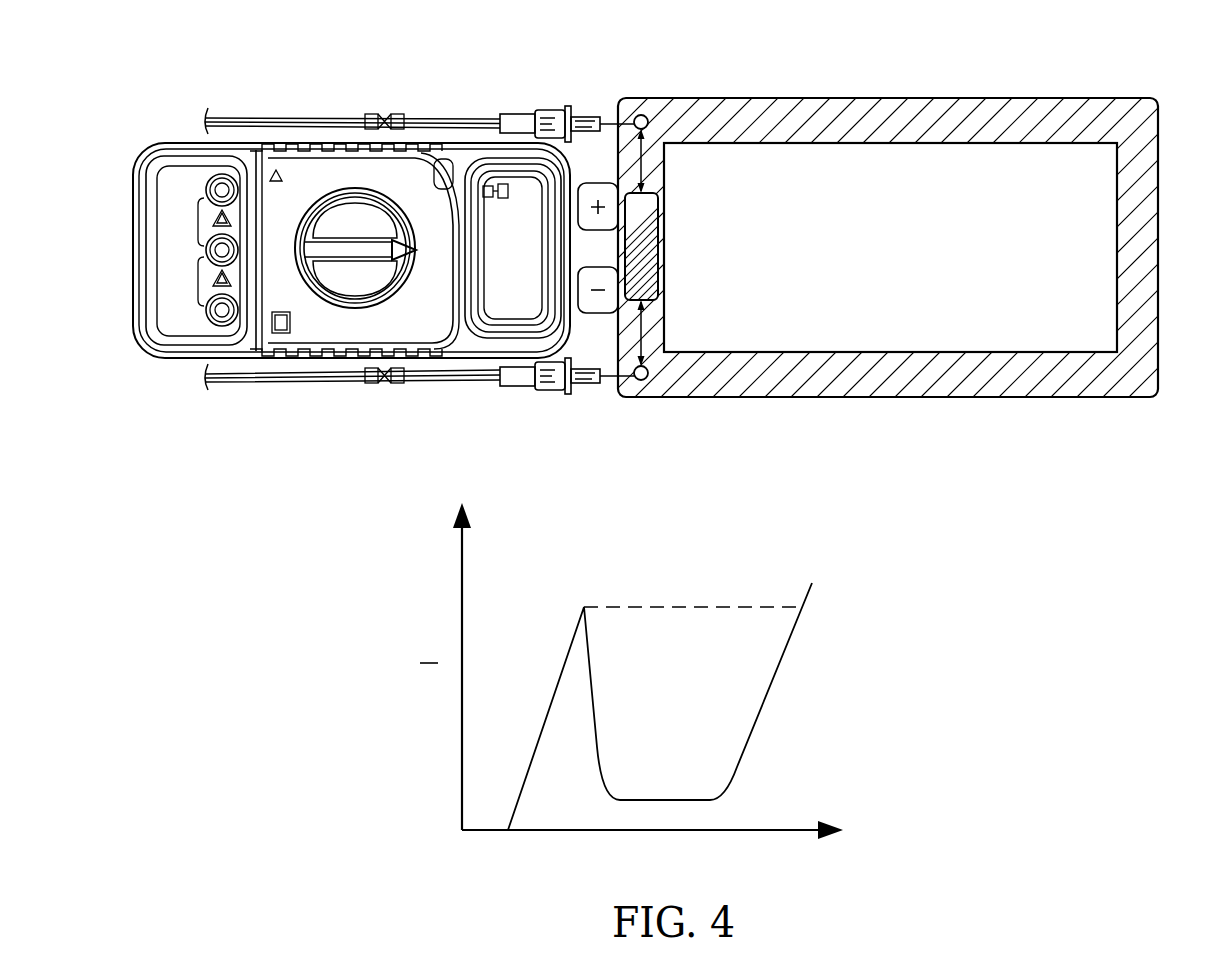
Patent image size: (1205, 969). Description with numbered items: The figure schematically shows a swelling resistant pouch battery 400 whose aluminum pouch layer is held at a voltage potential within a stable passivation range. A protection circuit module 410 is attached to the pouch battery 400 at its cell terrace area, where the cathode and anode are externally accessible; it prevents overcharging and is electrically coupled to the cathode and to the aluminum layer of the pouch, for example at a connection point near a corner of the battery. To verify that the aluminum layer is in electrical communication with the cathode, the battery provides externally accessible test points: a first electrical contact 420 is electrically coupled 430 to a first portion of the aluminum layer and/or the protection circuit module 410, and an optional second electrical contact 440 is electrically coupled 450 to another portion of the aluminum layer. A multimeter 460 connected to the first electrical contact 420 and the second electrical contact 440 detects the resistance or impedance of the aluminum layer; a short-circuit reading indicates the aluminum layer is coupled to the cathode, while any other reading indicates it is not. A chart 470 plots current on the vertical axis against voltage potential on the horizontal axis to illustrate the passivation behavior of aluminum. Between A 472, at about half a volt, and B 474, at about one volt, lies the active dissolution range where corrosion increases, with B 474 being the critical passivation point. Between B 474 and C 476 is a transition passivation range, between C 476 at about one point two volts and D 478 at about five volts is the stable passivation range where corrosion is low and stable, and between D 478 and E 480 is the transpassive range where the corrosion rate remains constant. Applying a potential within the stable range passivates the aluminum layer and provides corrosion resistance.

The swelling resistant pouch battery 400 is at (1104, 62).
The protection circuit module 410 is at (660, 250).
The first electrical contact 420 is at (644, 113).
The electrical coupling of first electrical contact 430 is at (662, 168).
The second electrical contact 440 is at (660, 398).
The electrical coupling of second electrical contact 450 is at (658, 332).
The multimeter 460 is at (268, 44).
The chart 470 is at (386, 495).
The point A 472 is at (500, 777).
The point B 474 is at (588, 568).
The point C 476 is at (588, 783).
The point D 478 is at (768, 797).
The point E 480 is at (828, 563).